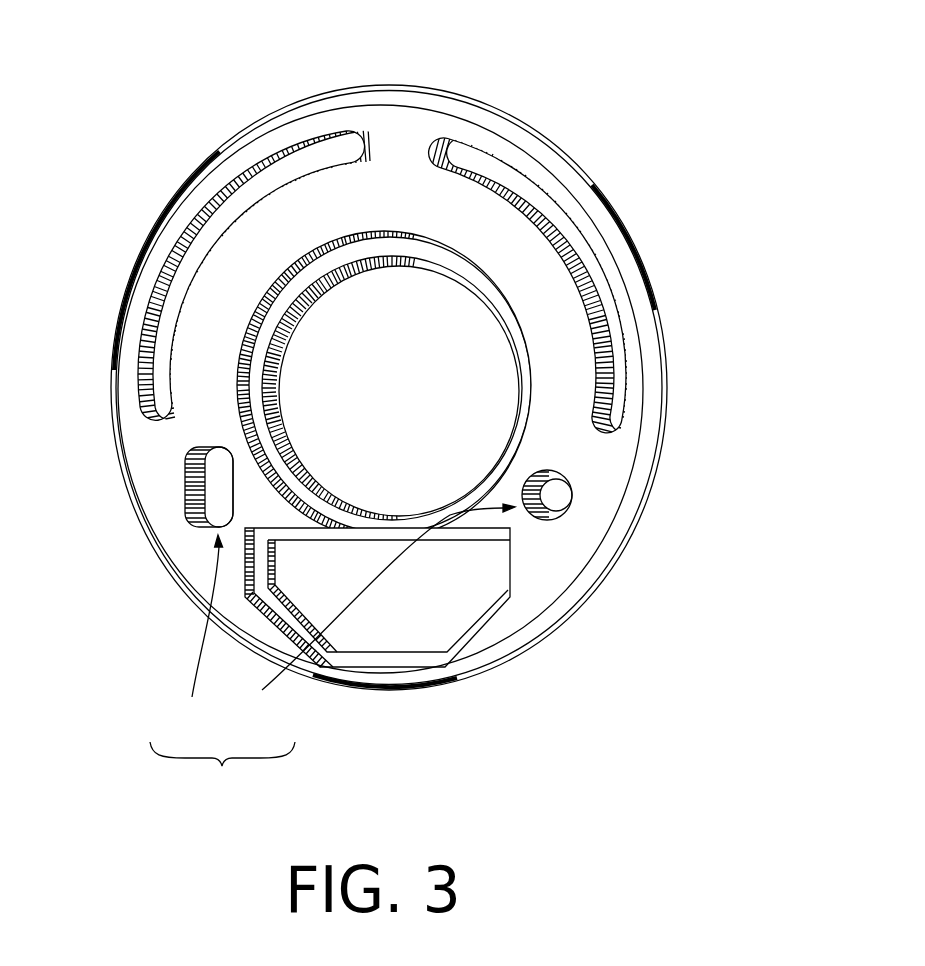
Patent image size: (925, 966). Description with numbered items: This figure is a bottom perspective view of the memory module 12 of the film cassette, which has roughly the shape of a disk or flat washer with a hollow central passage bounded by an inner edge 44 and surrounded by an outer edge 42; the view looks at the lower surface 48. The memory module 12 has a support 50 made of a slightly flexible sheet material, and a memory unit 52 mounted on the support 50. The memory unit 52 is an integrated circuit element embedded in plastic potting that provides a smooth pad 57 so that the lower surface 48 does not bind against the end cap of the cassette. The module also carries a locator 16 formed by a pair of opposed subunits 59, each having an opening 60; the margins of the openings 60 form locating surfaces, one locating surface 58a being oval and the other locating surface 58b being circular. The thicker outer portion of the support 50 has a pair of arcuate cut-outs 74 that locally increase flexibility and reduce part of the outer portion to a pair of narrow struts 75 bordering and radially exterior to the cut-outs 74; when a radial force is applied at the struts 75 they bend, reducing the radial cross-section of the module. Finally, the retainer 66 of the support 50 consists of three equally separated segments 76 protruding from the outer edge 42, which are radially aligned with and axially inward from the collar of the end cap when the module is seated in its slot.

The memory module 12 is at (760, 205).
The locator 16 is at (332, 653).
The outer edge 42 is at (585, 598).
The inner edge 44 is at (333, 266).
The lower surface 48 is at (582, 462).
The support 50 is at (142, 482).
The memory unit 52 is at (423, 623).
The pad 57 is at (399, 642).
The locating surface 58a is at (197, 523).
The locating surface 58b is at (543, 497).
The subunit 59 is at (346, 620).
The opening 60 is at (213, 472).
The retainer 66 is at (172, 193).
The cut-out 74 is at (313, 158).
The strut 75 is at (243, 160).
The segment 76 is at (440, 459).